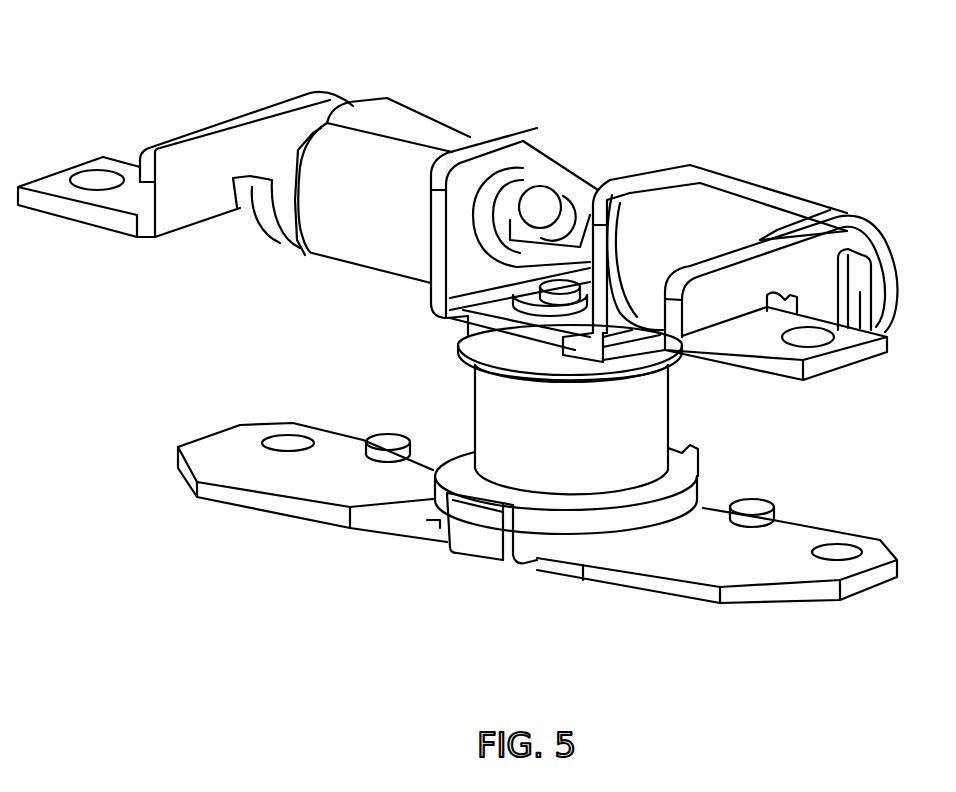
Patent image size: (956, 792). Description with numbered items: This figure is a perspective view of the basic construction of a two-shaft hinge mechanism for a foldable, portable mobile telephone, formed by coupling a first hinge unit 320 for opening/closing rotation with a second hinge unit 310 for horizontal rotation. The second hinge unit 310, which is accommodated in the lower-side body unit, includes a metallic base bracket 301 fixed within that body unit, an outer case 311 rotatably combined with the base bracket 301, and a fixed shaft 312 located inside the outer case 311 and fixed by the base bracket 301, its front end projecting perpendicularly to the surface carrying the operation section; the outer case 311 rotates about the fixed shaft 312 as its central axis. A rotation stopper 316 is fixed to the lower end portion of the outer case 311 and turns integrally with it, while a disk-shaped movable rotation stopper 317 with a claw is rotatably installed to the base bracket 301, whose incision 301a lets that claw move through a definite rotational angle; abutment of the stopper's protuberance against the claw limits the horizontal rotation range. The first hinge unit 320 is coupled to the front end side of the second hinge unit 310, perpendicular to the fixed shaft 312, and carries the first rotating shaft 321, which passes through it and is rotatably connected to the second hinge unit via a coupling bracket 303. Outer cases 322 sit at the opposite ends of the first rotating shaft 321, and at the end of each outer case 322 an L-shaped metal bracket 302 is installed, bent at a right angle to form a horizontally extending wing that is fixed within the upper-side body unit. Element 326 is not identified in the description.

The base bracket 301 is at (228, 447).
The incision 301a is at (363, 544).
The L-shaped bracket 302 is at (207, 135).
The coupling bracket 303 is at (683, 160).
The second hinge unit 310 is at (677, 428).
The outer case 311 is at (493, 410).
The fixed shaft 312 is at (480, 330).
The rotation stopper 316 is at (700, 456).
The movable rotation stopper 317 is at (472, 543).
The first hinge unit 320 is at (460, 108).
The first rotating shaft 321 is at (592, 192).
The outer case 322 is at (405, 115).
The boss 326 is at (538, 197).